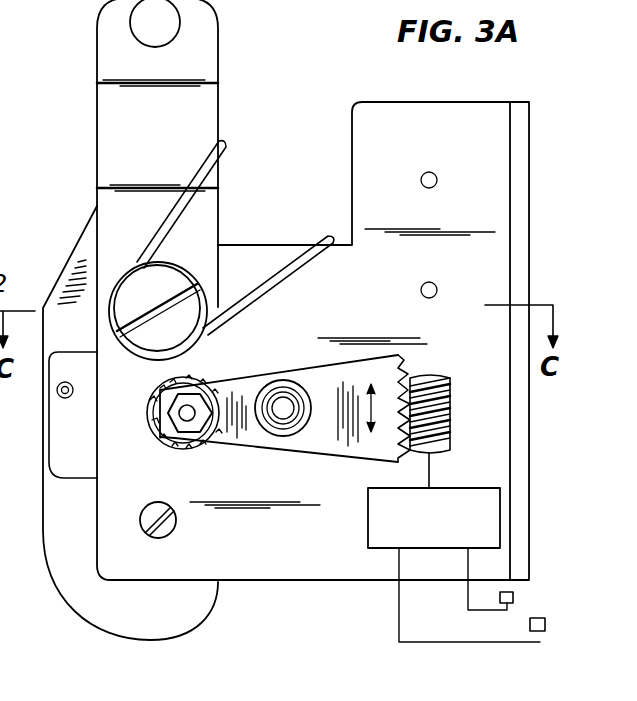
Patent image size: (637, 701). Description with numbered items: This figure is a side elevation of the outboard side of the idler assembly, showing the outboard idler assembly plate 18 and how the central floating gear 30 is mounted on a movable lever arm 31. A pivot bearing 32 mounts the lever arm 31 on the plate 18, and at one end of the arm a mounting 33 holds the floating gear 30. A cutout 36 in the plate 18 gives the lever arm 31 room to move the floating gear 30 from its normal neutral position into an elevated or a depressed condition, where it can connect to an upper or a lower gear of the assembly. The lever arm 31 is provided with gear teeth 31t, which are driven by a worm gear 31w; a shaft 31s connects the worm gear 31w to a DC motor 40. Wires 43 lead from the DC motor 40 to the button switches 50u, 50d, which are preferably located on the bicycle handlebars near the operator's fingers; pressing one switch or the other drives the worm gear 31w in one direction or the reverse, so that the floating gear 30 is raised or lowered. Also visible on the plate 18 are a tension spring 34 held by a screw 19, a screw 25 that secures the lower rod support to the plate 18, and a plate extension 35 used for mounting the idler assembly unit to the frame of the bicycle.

The outboard idler assembly plate 18 is at (406, 112).
The screw 19 is at (165, 283).
The screw 25 is at (145, 527).
The floating gear 30 is at (150, 400).
The lever arm 31 is at (297, 443).
The gear teeth 31t is at (402, 358).
The worm gear 31w is at (446, 398).
The shaft 31s is at (432, 468).
The pivot bearing 32 is at (272, 388).
The mounting 33 is at (180, 430).
The tension spring 34 is at (229, 147).
The plate extension 35 is at (206, 30).
The cutout 36 is at (158, 430).
The DC motor 40 is at (368, 523).
The wires 43 is at (467, 597).
The button switch 50u is at (513, 597).
The button switch 50d is at (541, 632).